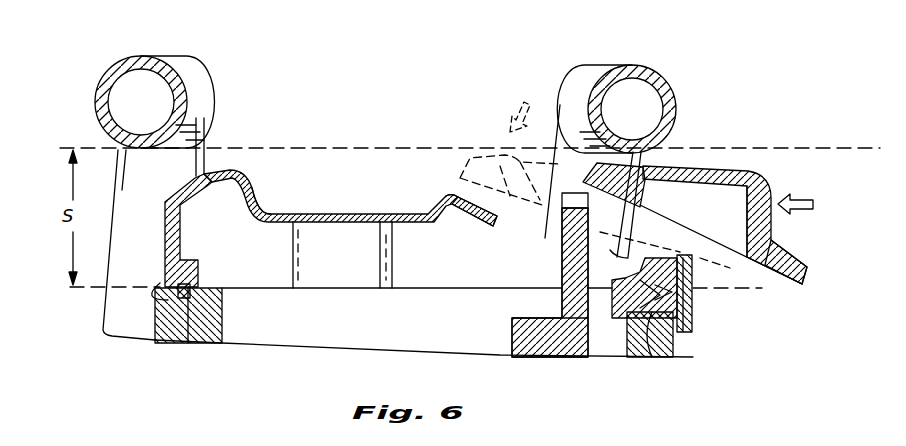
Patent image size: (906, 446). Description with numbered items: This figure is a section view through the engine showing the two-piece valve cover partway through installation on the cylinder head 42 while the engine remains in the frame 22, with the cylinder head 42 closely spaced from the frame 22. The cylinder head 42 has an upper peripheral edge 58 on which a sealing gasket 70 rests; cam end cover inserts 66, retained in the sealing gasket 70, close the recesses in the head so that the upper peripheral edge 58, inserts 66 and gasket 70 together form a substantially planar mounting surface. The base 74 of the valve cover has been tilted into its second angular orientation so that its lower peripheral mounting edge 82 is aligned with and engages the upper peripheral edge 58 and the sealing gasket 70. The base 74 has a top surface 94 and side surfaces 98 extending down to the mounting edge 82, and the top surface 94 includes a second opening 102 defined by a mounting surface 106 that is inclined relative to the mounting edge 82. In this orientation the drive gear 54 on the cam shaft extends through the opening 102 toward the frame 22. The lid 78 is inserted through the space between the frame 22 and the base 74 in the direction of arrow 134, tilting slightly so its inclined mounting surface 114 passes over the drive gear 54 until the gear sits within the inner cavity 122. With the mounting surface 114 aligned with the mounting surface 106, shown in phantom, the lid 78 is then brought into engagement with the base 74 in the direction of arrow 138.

The frame 22 is at (203, 80).
The cylinder head 42 is at (192, 326).
The drive gear 54 is at (560, 262).
The upper peripheral edge 58 is at (160, 285).
The cam end cover insert 66 is at (693, 328).
The sealing gasket 70 is at (190, 290).
The base 74 is at (366, 214).
The lid 78 is at (712, 170).
The lower peripheral mounting edge 82 is at (262, 290).
The top surface 94 is at (300, 214).
The side surface 98 is at (162, 208).
The second opening 102 is at (500, 227).
The mounting surface 106 is at (452, 194).
The mounting surface 114 is at (795, 282).
The inner cavity 122 is at (712, 204).
The arrow 134 is at (808, 191).
The arrow 138 is at (537, 90).